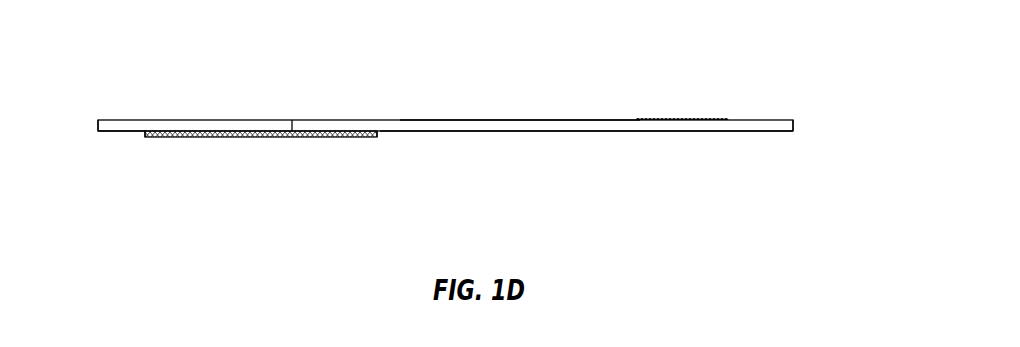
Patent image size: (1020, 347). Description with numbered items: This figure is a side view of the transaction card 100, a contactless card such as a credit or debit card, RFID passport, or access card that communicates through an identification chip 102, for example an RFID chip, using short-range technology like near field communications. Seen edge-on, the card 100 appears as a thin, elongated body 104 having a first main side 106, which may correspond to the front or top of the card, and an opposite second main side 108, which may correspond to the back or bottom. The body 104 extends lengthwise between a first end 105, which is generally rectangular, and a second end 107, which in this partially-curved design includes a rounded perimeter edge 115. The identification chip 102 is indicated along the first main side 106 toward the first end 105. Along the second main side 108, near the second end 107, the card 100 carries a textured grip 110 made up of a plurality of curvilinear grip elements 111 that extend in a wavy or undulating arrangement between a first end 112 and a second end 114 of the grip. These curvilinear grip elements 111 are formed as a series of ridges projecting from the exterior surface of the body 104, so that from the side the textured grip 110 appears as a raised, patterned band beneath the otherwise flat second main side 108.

The transaction card 100 is at (205, 79).
The identification chip 102 is at (662, 120).
The body 104 is at (499, 133).
The first end 105 is at (797, 127).
The first main side 106 is at (575, 120).
The second end 107 is at (94, 122).
The second main side 108 is at (605, 132).
The textured grip 110 is at (272, 140).
The curvilinear grip elements 111 is at (210, 138).
The first end of the textured grip 112 is at (142, 139).
The second end of the textured grip 114 is at (383, 137).
The rounded perimeter edge 115 is at (105, 132).